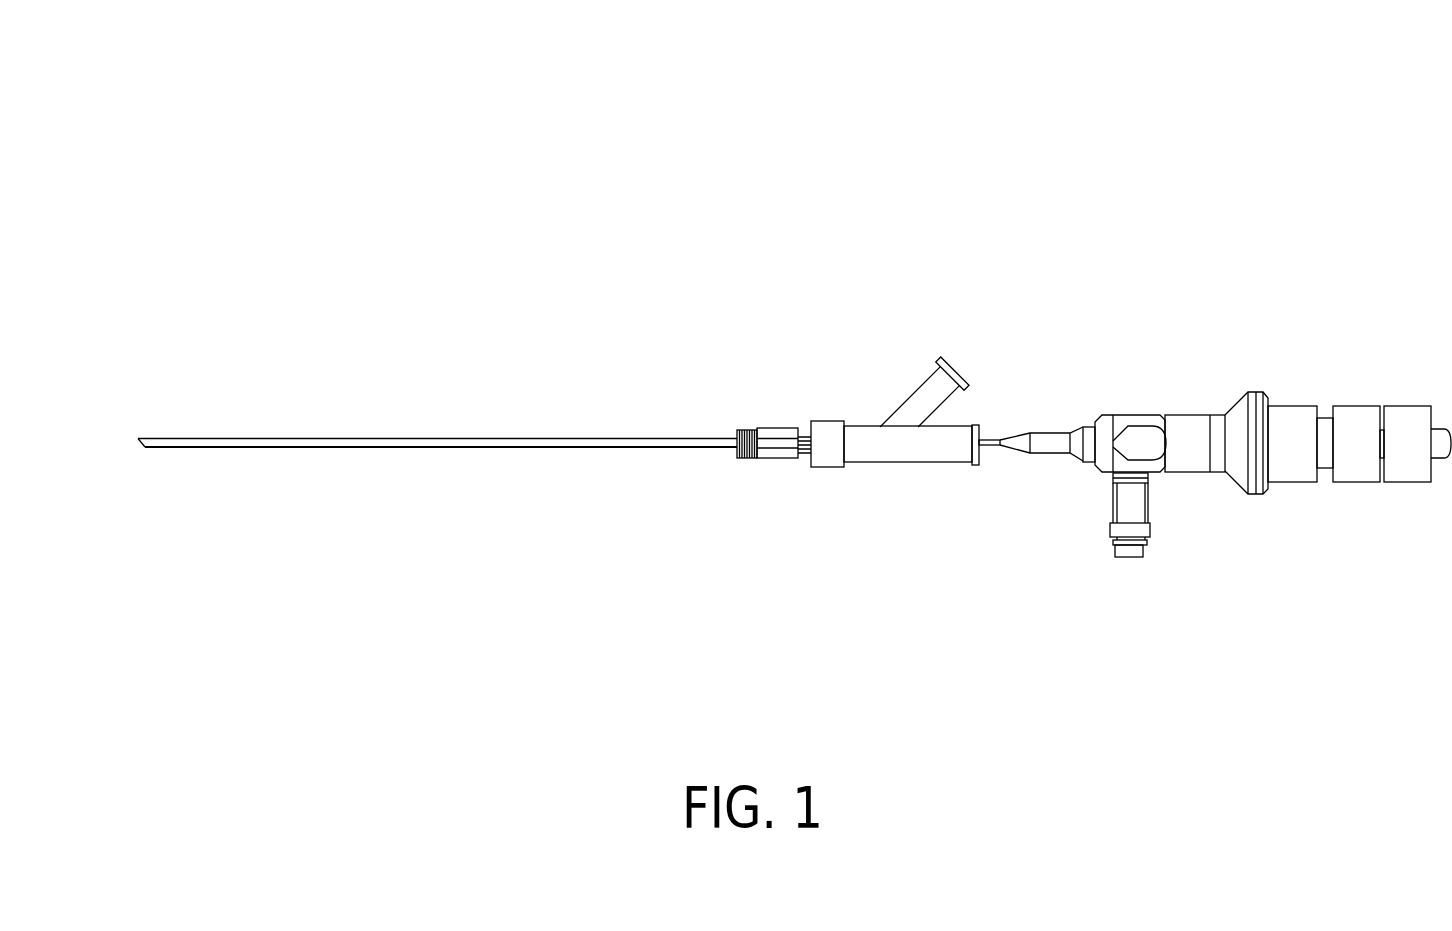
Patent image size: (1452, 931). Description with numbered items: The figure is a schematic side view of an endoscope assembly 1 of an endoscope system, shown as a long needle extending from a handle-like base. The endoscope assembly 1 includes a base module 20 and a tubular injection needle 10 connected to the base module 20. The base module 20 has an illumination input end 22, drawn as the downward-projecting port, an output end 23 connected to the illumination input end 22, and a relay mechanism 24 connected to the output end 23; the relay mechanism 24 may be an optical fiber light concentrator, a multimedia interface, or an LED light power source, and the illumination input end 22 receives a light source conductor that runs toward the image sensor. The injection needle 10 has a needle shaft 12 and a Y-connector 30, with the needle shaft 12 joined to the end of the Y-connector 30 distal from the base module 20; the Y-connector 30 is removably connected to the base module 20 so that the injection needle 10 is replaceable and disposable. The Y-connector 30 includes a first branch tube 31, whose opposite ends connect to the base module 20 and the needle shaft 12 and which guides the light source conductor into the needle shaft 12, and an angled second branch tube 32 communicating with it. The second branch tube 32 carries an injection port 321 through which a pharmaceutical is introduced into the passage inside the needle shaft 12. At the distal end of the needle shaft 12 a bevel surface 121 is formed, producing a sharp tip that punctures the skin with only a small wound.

The endoscope assembly 1 is at (149, 78).
The injection needle 10 is at (588, 413).
The needle shaft 12 is at (390, 438).
The bevel surface 121 is at (142, 443).
The base module 20 is at (1173, 375).
The illumination input end 22 is at (1130, 555).
The output end 23 is at (1256, 487).
The relay mechanism 24 is at (1357, 466).
The Y-connector 30 is at (880, 280).
The first branch tube 31 is at (902, 445).
The second branch tube 32 is at (925, 388).
The injection port 321 is at (957, 365).